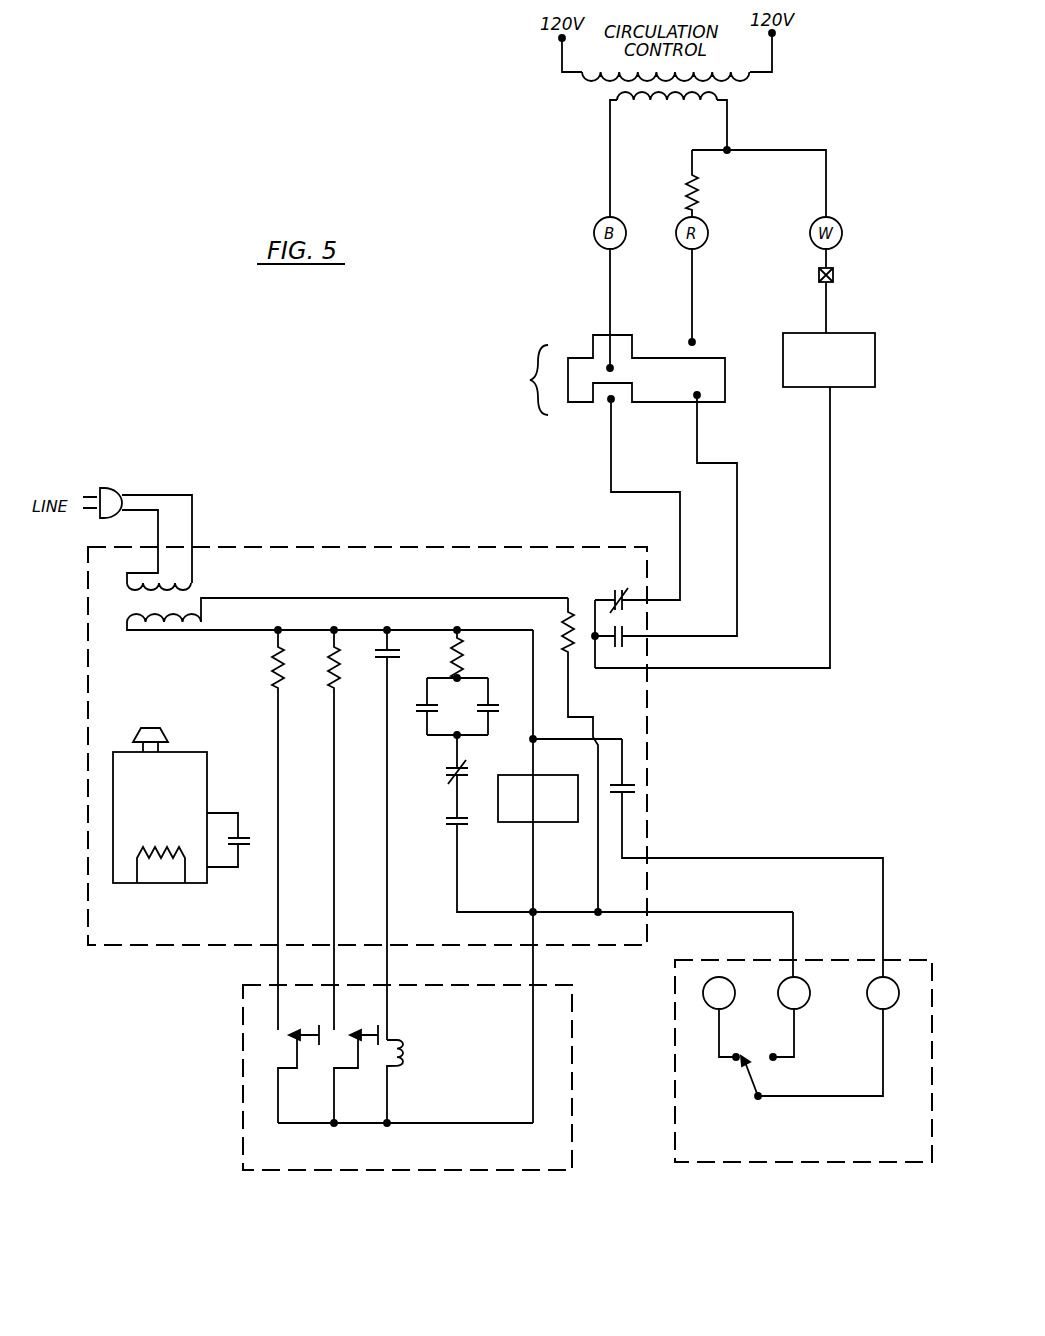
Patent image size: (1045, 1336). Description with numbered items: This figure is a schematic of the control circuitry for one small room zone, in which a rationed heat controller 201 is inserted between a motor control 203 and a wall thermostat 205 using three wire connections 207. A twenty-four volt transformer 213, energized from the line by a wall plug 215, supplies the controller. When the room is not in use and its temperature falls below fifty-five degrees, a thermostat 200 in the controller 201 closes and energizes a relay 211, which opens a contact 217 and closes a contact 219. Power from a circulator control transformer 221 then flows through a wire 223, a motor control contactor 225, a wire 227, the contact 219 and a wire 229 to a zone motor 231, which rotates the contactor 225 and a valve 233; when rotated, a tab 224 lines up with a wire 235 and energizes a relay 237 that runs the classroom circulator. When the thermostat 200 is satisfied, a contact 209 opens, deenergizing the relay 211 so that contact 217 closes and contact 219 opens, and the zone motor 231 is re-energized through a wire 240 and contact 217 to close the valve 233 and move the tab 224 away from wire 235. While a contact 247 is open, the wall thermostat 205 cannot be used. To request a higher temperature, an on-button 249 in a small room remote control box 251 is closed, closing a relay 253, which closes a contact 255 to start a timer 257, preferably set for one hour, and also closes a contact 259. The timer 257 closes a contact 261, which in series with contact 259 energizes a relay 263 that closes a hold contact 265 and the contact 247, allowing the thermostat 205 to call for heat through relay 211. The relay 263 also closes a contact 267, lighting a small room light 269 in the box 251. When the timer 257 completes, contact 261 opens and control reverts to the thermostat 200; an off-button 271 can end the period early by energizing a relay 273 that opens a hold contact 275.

The thermostat 200 is at (515, 822).
The controller 201 is at (648, 741).
The motor control 203 is at (700, 400).
The wall thermostat 205 is at (664, 1121).
The wire connections 207 is at (721, 1050).
The contact 209 is at (762, 1090).
The relay 211 is at (566, 623).
The 24 volt transformer 213 is at (190, 603).
The wall plug 215 is at (112, 488).
The contact 217 is at (607, 590).
The contact 219 is at (630, 637).
The circulator control transformer 221 is at (746, 86).
The wire 223 is at (610, 195).
The tab 224 is at (601, 333).
The motor control contactor 225 is at (829, 172).
The wire 227 is at (738, 502).
The wire 229 is at (832, 502).
The zone motor 231 is at (845, 334).
The valve 233 is at (833, 276).
The wire 235 is at (692, 352).
The relay 237 is at (699, 193).
The wire 240 is at (681, 557).
The contact 247 is at (636, 779).
The on-button 249 is at (291, 1031).
The small room remote control box 251 is at (582, 1063).
The relay 253 is at (268, 668).
The contact 255 is at (249, 848).
The timer 257 is at (112, 808).
The contact 259 is at (416, 719).
The contact 261 is at (452, 833).
The relay 263 is at (463, 649).
The hold contact 265 is at (496, 719).
The contact 267 is at (379, 666).
The small room light 269 is at (416, 1058).
The off-button 271 is at (348, 1031).
The relay 273 is at (324, 668).
The hold contact 275 is at (448, 783).